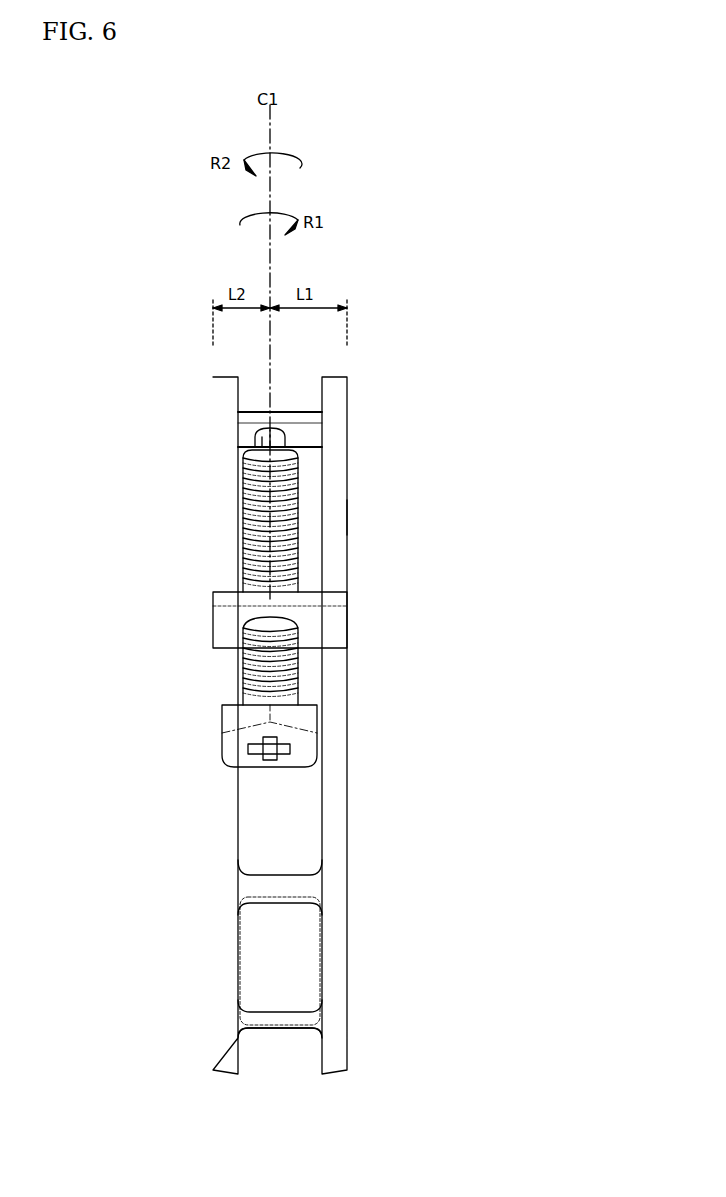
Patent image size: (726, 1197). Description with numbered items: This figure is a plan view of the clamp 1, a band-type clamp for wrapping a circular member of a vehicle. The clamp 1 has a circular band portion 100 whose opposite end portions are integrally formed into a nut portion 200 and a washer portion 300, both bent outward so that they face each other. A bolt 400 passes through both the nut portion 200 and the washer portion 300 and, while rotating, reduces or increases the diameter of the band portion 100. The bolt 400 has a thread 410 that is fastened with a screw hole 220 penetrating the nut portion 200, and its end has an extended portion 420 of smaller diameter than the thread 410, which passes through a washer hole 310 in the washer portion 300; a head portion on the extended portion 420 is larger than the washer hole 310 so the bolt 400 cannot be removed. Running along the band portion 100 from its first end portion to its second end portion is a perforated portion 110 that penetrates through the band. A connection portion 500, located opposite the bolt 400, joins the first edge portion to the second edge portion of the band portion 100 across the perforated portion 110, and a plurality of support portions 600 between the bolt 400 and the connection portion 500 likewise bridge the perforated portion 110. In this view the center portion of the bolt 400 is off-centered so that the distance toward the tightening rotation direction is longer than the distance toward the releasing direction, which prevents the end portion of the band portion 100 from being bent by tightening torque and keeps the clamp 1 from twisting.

The clamp 1 is at (350, 517).
The band portion 100 is at (333, 793).
The perforated portion 110 is at (285, 950).
The nut portion 200 is at (325, 630).
The screw hole 220 is at (269, 618).
The washer portion 300 is at (287, 415).
The washer hole 310 is at (284, 437).
The bolt 400 is at (305, 748).
The thread 410 is at (245, 495).
The extended portion 420 is at (265, 436).
The connection portion 500 is at (272, 887).
The support portion 600 is at (277, 1030).